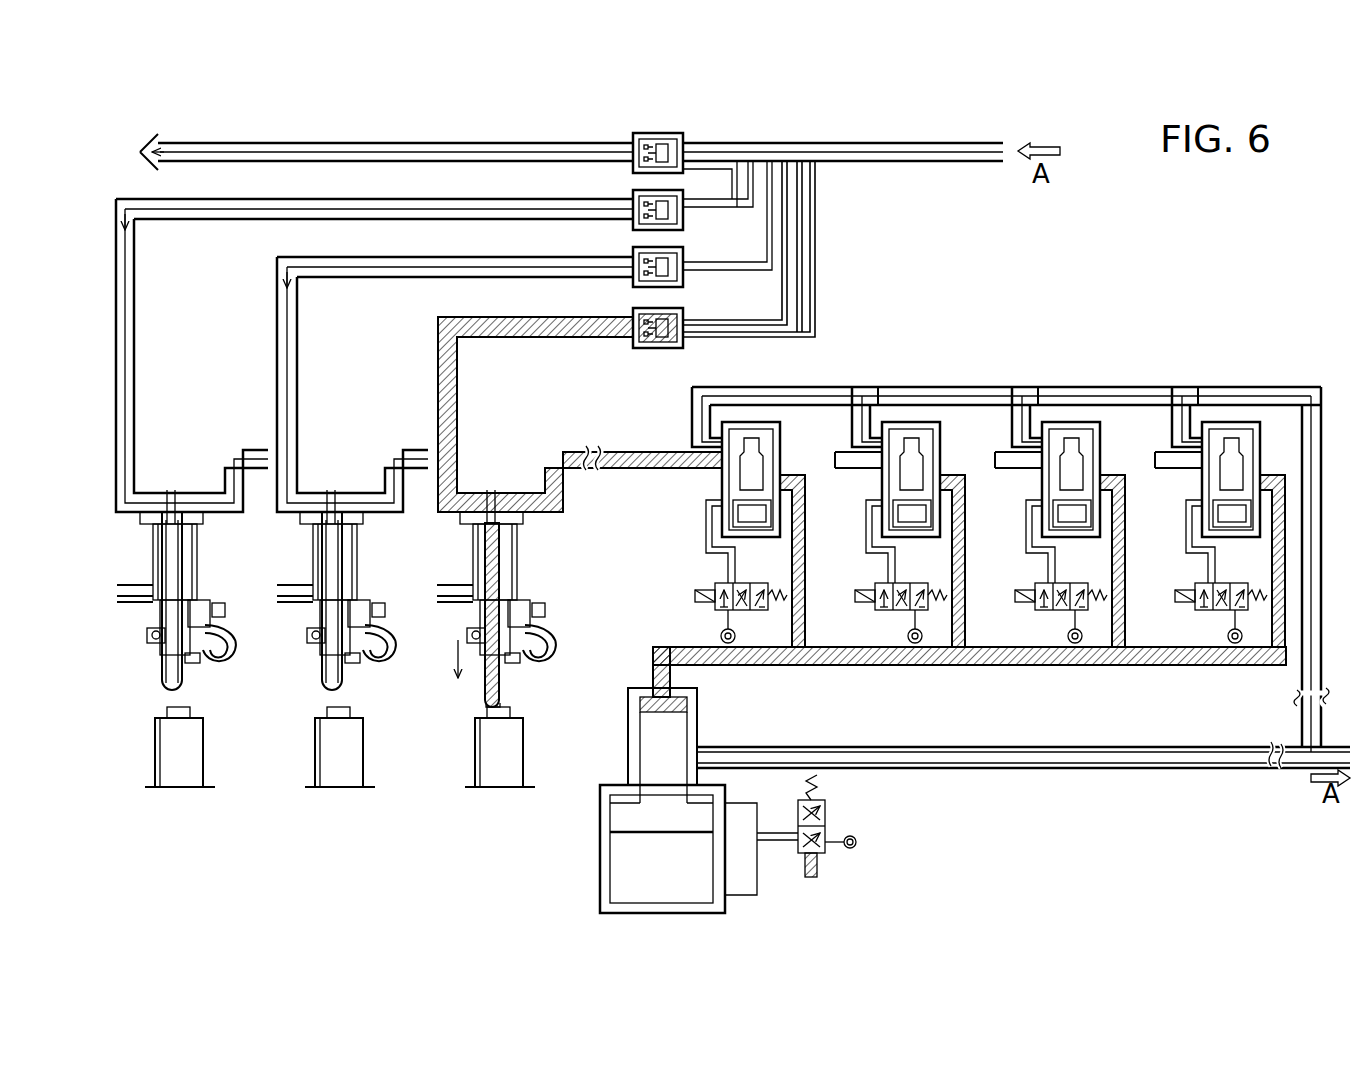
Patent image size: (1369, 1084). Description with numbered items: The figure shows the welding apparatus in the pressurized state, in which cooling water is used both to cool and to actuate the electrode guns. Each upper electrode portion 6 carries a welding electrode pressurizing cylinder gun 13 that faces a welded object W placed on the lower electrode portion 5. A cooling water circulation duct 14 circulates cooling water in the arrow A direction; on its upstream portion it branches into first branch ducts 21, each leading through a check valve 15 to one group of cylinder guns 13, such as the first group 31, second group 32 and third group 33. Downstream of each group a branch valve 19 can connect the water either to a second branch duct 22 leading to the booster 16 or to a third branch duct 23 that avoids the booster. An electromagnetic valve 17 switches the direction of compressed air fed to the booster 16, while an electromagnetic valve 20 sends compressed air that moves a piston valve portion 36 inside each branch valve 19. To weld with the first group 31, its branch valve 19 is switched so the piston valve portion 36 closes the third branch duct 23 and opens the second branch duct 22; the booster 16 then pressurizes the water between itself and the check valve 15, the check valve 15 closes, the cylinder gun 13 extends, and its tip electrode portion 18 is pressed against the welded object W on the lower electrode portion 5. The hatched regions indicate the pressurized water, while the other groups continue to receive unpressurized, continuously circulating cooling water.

The lower electrode portion 5 is at (215, 772).
The upper electrode portion 6 is at (300, 642).
The welding electrode pressurizing cylinder gun 13 is at (160, 652).
The cooling water circulation duct 14 is at (927, 165).
The check valve 15 is at (628, 247).
The booster 16 is at (596, 872).
The electromagnetic valve 17 is at (830, 812).
The tip electrode portion 18 is at (502, 698).
The branch valve 19 is at (789, 440).
The electromagnetic valve 20 is at (701, 583).
The first branch duct 21 is at (753, 192).
The second branch duct 22 is at (808, 627).
The third branch duct 23 is at (690, 414).
The first group 31 is at (523, 579).
The second group 32 is at (363, 579).
The third group 33 is at (203, 579).
The piston valve portion 36 is at (743, 470).
The welded object W is at (163, 713).